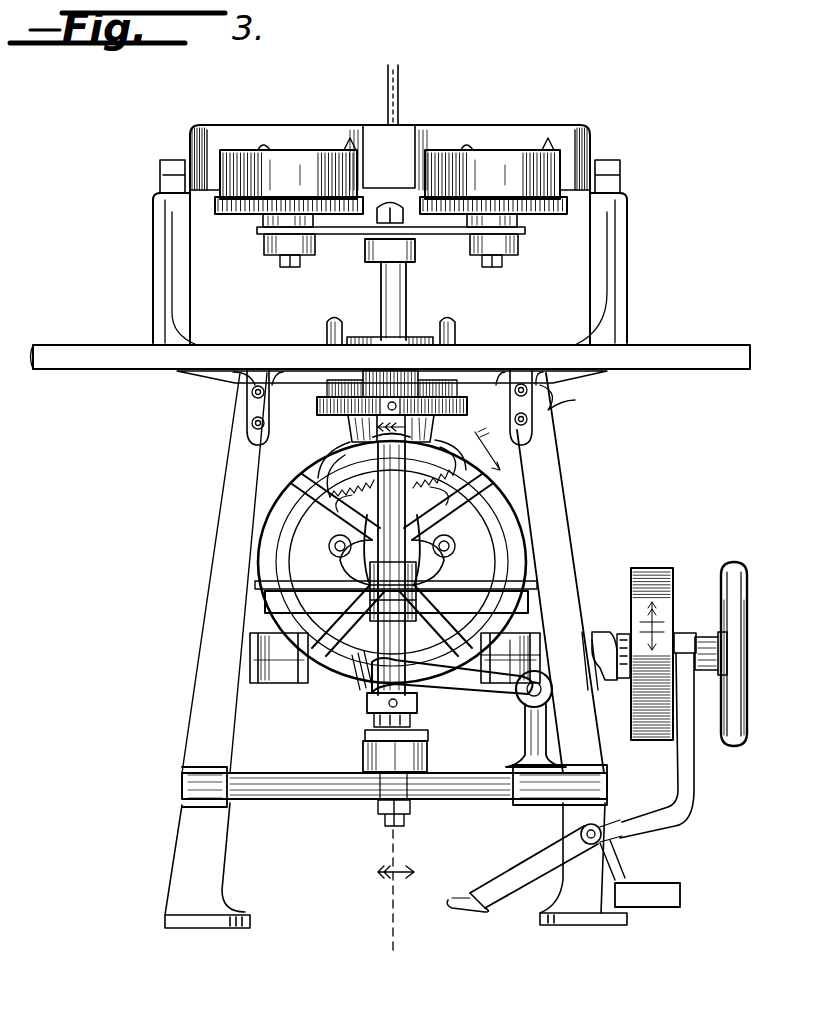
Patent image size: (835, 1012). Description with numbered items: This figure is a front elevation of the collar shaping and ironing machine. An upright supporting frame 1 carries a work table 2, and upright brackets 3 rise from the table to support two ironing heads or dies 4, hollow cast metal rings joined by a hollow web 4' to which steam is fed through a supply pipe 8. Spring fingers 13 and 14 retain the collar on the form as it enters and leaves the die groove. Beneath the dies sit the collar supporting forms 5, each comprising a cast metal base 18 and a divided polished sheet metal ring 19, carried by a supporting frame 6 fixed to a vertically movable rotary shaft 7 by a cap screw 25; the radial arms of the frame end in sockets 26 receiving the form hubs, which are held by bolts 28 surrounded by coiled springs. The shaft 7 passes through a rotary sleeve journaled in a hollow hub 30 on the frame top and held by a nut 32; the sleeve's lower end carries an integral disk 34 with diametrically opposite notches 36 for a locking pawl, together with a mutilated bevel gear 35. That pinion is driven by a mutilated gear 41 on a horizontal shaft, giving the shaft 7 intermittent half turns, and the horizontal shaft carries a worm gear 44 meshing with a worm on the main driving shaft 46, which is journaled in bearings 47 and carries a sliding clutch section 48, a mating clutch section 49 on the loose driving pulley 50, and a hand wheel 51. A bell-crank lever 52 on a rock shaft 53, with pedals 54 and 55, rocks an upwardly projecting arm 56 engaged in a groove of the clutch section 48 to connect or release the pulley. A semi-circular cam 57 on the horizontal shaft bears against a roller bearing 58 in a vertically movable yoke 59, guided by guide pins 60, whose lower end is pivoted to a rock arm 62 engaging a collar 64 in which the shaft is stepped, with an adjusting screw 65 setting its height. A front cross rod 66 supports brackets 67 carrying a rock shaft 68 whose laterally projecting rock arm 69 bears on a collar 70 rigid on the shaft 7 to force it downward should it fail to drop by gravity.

The upright supporting frame 1 is at (566, 401).
The work table 2 is at (220, 360).
The upright brackets 3 is at (152, 273).
The ironing heads or dies 4 is at (390, 142).
The hollow web 4' is at (393, 135).
The collar supporting forms 5 is at (243, 213).
The supporting frame for the forms 6 is at (375, 255).
The vertically movable rotary shaft 7 is at (412, 527).
The supply pipe 8 is at (388, 78).
The spring finger 13 is at (350, 138).
The spring finger 14 is at (265, 148).
The base 18 is at (265, 216).
The collar supporting ring 19 is at (312, 175).
The cap screw 25 is at (392, 206).
The sockets 26 is at (268, 256).
The bolts 28 is at (290, 268).
The hollow hub 30 is at (248, 400).
The nut 32 is at (366, 336).
The disk 34 is at (248, 420).
The mutilated bevel gear 35 is at (348, 425).
The notches 36 is at (410, 365).
The mutilated gear 41 is at (275, 522).
The worm gear 44 is at (355, 487).
The main driving shaft 46 is at (530, 656).
The bearings 47 is at (270, 684).
The clutch section 48 is at (606, 634).
The clutch section 49 is at (624, 680).
The driving pulley 50 is at (652, 570).
The hand wheel 51 is at (735, 562).
The bell-crank lever 52 is at (548, 865).
The rock shaft 53 is at (600, 832).
The pedal 54 is at (474, 900).
The pedal 55 is at (655, 908).
The upwardly projecting arm 56 is at (590, 672).
The semi-circular cam 57 is at (330, 553).
The roller bearing 58 is at (455, 472).
The vertically movable yoke 59 is at (470, 542).
The guide pins 60 is at (327, 324).
The rock arm 62 is at (364, 755).
The collar 64 is at (428, 752).
The adjusting screw 65 is at (398, 820).
The cross rod 66 is at (315, 800).
The brackets 67 is at (547, 745).
The rock shaft 68 is at (530, 698).
The rock arm 69 is at (466, 694).
The collar 70 is at (367, 712).